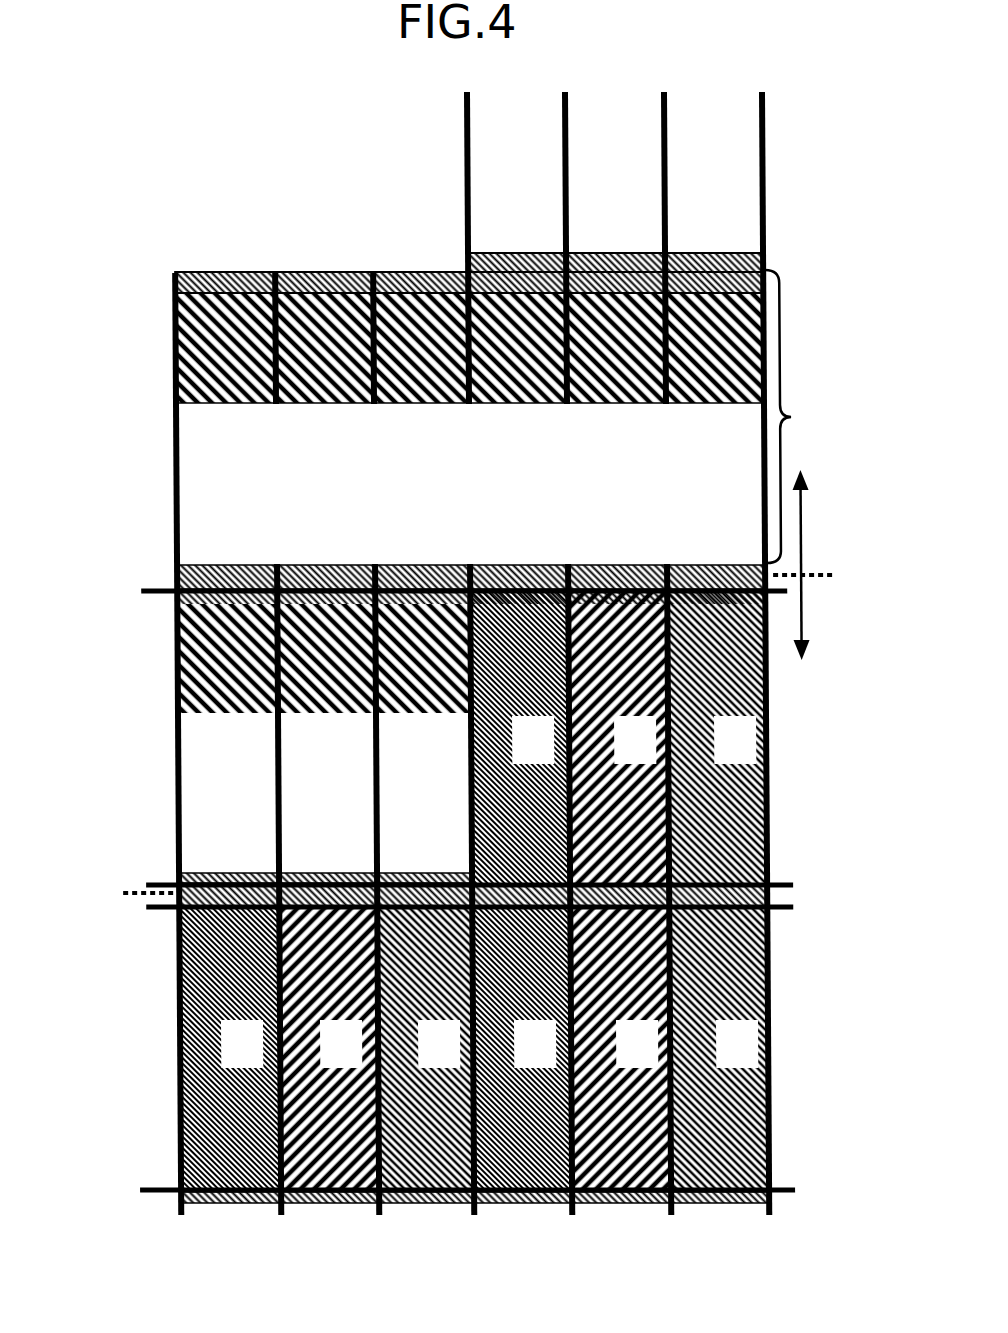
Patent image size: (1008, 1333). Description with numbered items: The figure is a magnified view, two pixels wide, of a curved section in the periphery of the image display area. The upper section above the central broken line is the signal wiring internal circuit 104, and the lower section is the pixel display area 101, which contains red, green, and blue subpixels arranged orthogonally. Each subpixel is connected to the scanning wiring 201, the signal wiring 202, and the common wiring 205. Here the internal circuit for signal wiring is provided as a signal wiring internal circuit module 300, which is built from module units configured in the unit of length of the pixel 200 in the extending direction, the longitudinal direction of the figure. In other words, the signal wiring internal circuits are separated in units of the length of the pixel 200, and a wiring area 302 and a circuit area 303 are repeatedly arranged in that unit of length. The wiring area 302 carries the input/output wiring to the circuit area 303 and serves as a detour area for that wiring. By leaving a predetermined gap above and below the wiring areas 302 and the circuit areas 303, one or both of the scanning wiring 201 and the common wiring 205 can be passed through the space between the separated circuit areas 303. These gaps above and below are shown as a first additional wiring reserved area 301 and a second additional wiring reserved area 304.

The signal wiring internal circuit module 300 is at (808, 416).
The first additional wiring reserved area 301 is at (176, 283).
The wiring area 302 is at (176, 340).
The circuit area 303 is at (176, 468).
The second additional wiring reserved area 304 is at (176, 566).
The common wiring 205 is at (150, 594).
The scanning wiring 201 is at (143, 884).
The signal wiring 202 is at (176, 1090).
The pixel 200 is at (768, 772).
The signal wiring internal circuit 104 is at (822, 522).
The pixel display area 101 is at (834, 617).